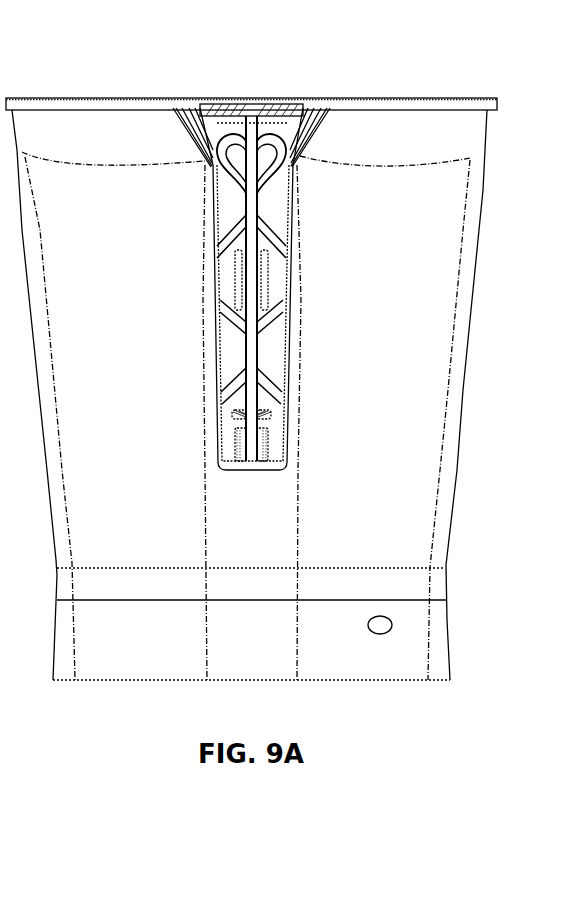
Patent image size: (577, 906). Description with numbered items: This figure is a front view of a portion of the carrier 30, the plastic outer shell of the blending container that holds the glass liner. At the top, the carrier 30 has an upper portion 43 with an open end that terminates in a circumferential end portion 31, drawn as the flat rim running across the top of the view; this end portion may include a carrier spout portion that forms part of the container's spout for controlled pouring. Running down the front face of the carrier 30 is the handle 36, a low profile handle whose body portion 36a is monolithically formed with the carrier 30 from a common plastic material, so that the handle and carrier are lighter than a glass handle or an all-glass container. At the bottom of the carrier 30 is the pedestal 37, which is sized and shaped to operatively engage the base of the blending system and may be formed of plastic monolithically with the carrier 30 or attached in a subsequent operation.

The carrier 30 is at (462, 370).
The circumferential end portion 31 is at (470, 98).
The upper portion 43 is at (490, 112).
The handle 36 is at (284, 452).
The body portion 36a is at (287, 200).
The pedestal 37 is at (457, 640).